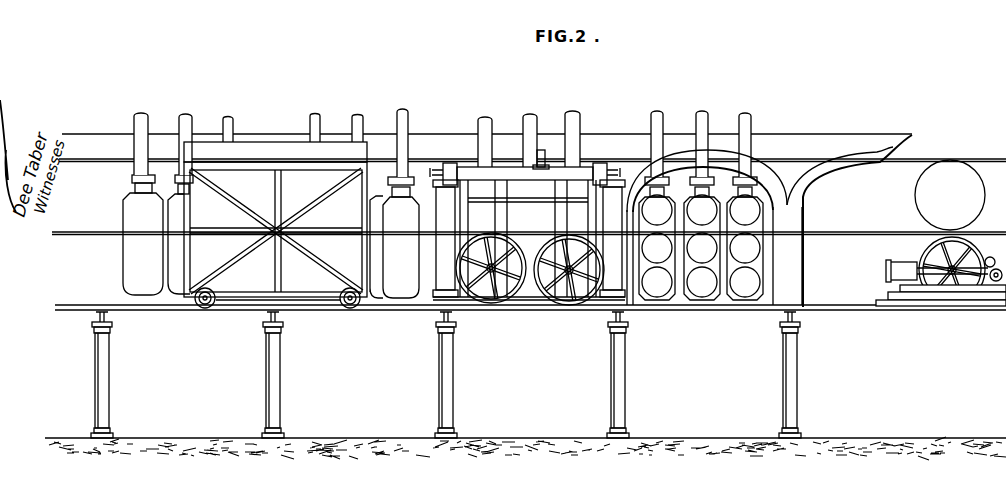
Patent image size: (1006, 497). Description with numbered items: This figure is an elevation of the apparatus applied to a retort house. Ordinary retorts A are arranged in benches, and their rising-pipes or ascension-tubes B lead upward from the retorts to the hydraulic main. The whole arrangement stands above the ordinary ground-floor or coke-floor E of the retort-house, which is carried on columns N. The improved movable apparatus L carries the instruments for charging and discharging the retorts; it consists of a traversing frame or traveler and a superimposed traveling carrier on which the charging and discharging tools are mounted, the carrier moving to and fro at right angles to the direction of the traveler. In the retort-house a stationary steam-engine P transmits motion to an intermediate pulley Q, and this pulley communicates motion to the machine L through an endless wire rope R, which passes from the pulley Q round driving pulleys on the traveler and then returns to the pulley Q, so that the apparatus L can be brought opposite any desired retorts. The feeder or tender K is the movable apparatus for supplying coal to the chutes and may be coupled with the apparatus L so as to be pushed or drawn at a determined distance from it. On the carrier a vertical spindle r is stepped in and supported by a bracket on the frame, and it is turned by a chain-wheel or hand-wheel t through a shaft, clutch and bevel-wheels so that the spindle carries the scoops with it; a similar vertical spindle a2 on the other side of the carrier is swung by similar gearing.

The retorts A is at (443, 237).
The rising-pipes or ascension-tubes B is at (442, 143).
The feeder or tender K is at (275, 225).
The movable apparatus L is at (527, 227).
The columns N is at (446, 375).
The ground-floor or coke-floor E is at (525, 443).
The stationary steam-engine P is at (941, 271).
The intermediate pulley Q is at (950, 195).
The endless wire rope R is at (529, 184).
The chain-wheel or hand-wheel t is at (769, 221).
The vertical spindle r is at (445, 238).
The post a2 is at (612, 238).